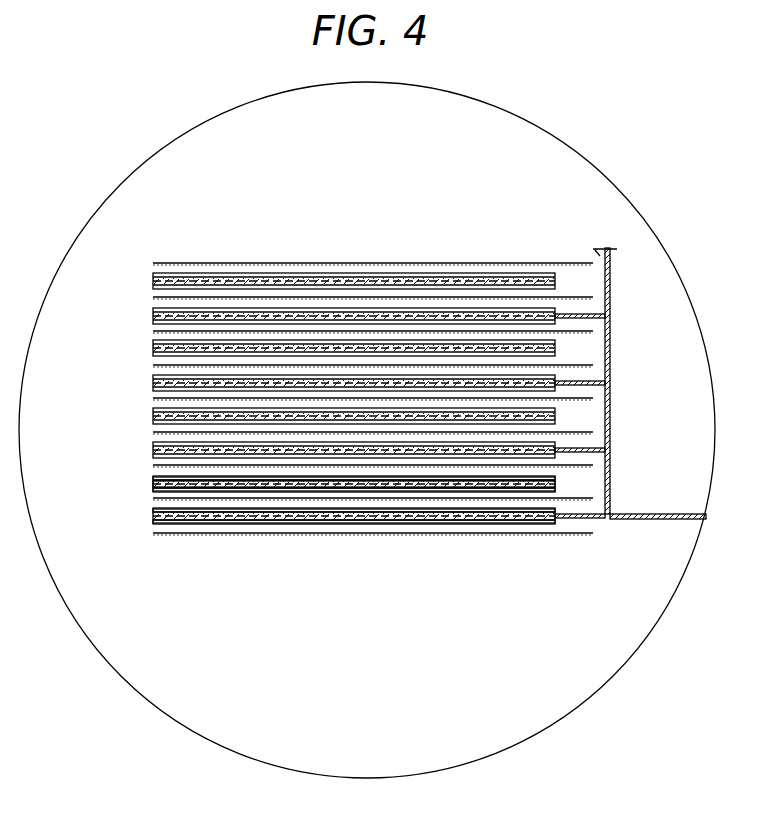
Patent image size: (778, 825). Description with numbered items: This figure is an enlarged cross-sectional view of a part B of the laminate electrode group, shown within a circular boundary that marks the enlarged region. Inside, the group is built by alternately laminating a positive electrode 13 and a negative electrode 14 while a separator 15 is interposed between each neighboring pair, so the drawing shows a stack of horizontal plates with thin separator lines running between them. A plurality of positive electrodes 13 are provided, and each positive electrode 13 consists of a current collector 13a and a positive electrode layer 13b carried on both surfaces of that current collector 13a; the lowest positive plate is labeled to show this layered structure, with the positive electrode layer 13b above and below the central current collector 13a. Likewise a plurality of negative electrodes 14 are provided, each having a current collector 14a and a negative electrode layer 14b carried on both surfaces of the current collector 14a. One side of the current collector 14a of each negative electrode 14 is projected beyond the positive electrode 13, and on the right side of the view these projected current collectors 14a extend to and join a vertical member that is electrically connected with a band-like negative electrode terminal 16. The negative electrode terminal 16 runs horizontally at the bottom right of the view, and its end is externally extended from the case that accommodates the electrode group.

The positive electrode 13 is at (148, 281).
The current collector 13a is at (153, 484).
The positive electrode layer 13b is at (153, 477).
The negative electrode 14 is at (148, 316).
The current collector 14a is at (587, 313).
The negative electrode layer 14b is at (158, 509).
The separator 15 is at (430, 262).
The band-like negative electrode terminal 16 is at (655, 520).
The part B is at (605, 684).